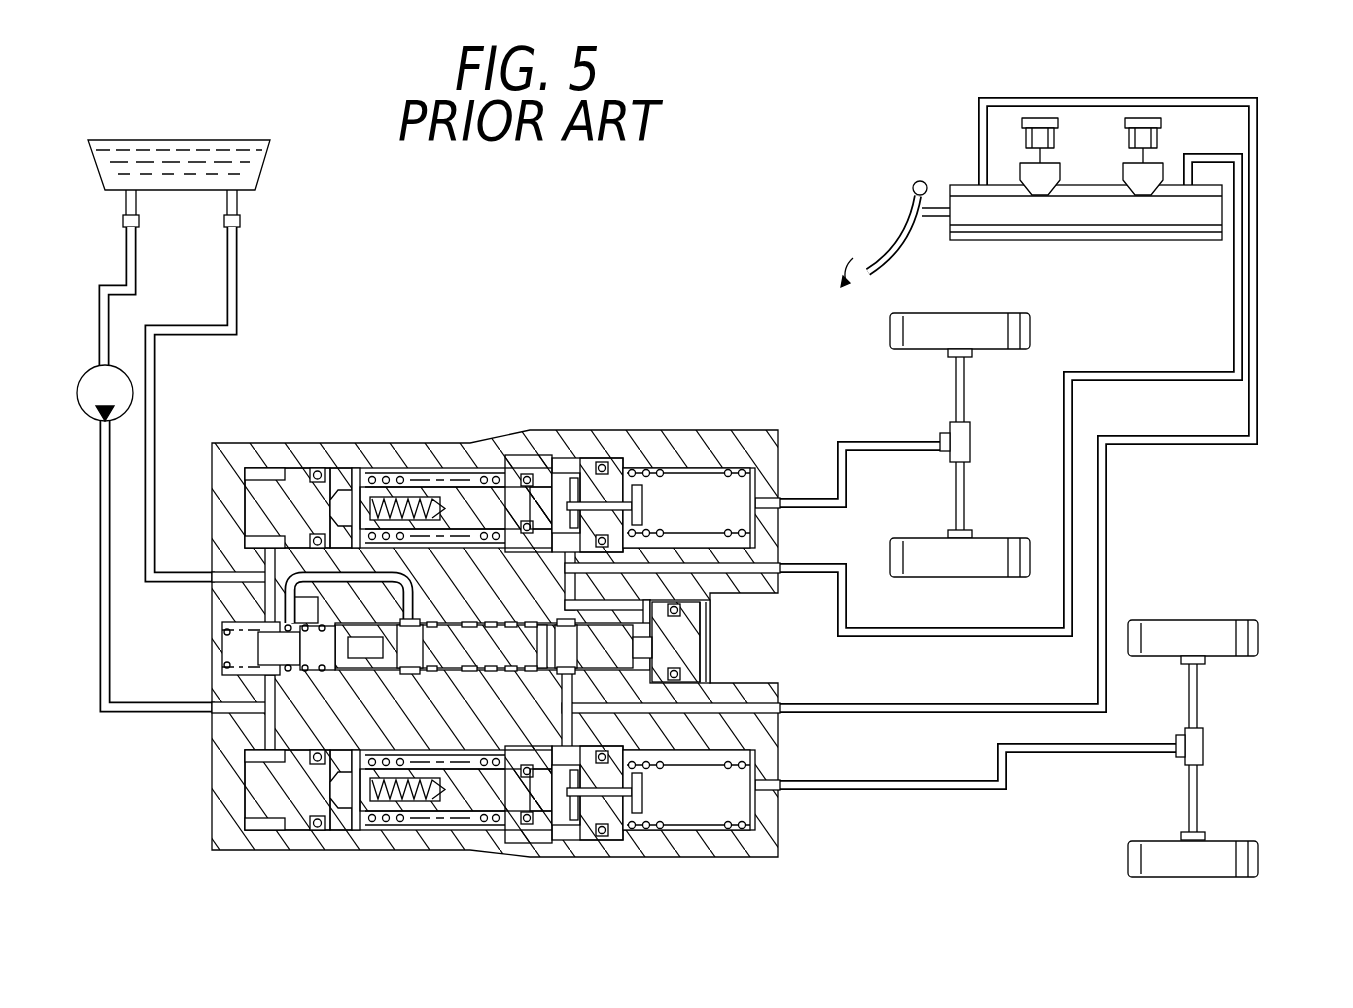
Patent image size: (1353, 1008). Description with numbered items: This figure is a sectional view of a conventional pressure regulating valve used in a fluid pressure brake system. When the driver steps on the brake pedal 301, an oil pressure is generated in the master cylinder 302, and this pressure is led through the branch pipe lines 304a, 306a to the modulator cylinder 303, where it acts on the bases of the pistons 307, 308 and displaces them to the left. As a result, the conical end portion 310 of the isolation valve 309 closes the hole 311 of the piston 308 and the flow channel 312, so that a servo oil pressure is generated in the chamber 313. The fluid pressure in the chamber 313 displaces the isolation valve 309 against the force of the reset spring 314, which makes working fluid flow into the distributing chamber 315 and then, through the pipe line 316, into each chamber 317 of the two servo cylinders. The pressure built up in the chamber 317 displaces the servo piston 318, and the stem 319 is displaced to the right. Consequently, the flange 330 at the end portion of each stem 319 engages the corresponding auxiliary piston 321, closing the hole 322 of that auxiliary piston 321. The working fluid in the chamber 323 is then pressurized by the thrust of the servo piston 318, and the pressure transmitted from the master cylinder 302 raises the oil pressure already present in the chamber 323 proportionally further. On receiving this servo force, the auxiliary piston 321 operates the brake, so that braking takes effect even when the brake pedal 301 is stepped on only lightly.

The brake pedal 301 is at (900, 233).
The master cylinder 302 is at (1130, 243).
The modulator cylinder 303 is at (678, 412).
The branch pipe line 304a is at (1243, 252).
The branch pipe line 306a is at (1258, 345).
The piston 307 is at (610, 643).
The piston 308 is at (488, 810).
The isolation valve 309 is at (268, 738).
The conical end portion 310 is at (300, 770).
The hole 311 is at (376, 830).
The flow channel 312 is at (237, 328).
The chamber 313 is at (282, 612).
The reset spring 314 is at (262, 662).
The distributing chamber 315 is at (262, 648).
The pipe line 316 is at (245, 562).
The chamber 317 is at (262, 470).
The servo piston 318 is at (340, 488).
The stem 319 is at (450, 500).
The auxiliary piston 321 is at (600, 462).
The hole 322 is at (645, 508).
The chamber 323 is at (728, 470).
The flange 330 is at (525, 458).